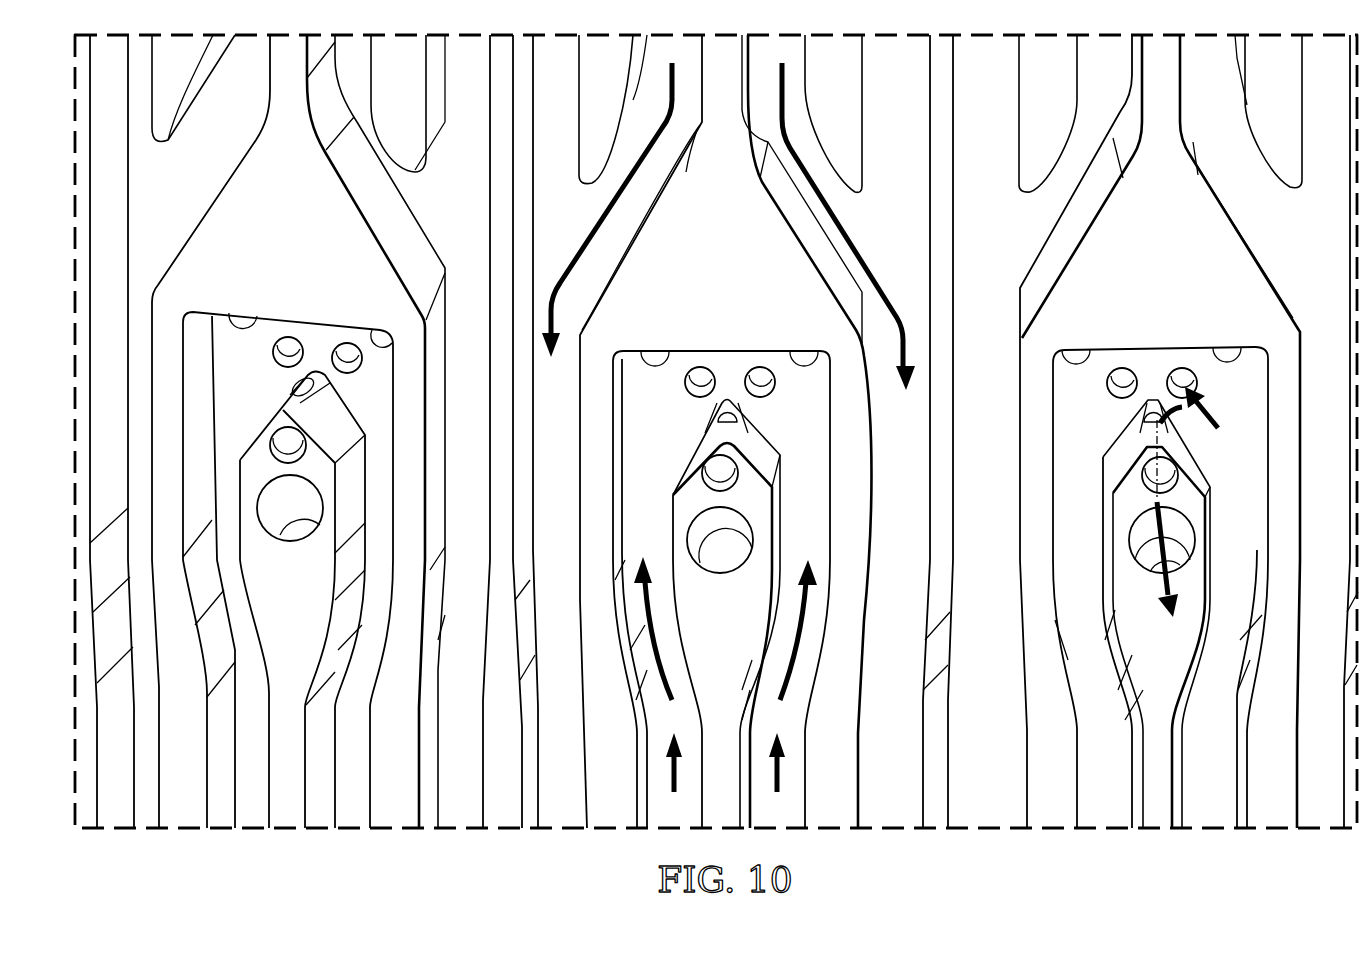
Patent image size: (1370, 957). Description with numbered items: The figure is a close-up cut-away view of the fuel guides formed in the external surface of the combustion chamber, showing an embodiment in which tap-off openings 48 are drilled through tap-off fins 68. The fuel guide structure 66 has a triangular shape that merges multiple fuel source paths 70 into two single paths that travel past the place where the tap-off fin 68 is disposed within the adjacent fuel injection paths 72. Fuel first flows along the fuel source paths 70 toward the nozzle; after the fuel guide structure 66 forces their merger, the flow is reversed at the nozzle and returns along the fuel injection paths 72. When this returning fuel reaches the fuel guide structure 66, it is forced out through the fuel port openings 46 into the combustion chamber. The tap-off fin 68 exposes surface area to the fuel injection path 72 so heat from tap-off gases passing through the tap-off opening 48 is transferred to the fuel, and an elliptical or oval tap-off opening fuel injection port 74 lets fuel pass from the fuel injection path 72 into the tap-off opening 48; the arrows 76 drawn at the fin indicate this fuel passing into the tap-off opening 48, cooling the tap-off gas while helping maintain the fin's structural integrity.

The fuel port openings 46 is at (294, 340).
The tap-off opening 48 is at (283, 540).
The fuel guide structure 66 is at (220, 210).
The tap-off fin 68 is at (355, 422).
The fuel source paths 70 is at (602, 222).
The fuel injection paths 72 is at (660, 653).
The tap-off opening fuel injection port 74 is at (727, 410).
The cross flow direction 76 is at (1215, 420).